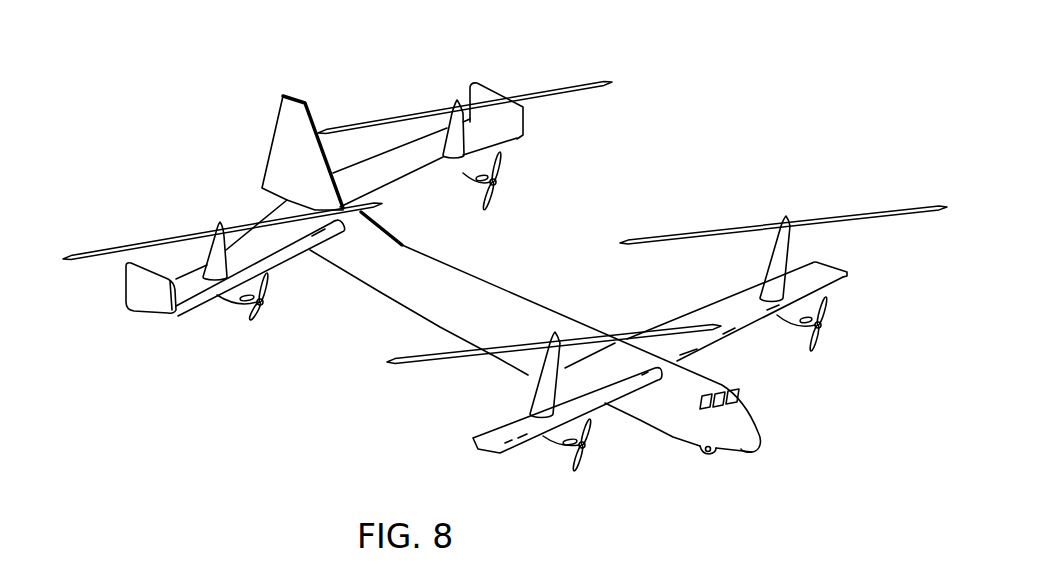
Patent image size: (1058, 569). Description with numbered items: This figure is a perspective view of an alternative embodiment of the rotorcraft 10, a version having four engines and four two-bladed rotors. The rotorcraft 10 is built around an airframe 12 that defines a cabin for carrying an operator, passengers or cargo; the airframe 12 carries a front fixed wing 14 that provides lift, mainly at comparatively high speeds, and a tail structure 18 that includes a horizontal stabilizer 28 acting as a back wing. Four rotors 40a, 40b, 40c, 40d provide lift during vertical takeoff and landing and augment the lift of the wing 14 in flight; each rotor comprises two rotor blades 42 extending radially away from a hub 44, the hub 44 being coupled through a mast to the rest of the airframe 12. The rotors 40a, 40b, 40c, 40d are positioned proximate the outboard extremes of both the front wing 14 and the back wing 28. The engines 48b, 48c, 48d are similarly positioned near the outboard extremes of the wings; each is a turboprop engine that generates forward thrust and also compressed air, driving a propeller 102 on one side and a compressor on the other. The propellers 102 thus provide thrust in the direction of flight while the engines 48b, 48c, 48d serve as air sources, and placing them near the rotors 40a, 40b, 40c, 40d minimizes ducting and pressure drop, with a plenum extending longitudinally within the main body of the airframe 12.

The rotorcraft 10 is at (221, 86).
The airframe 12 is at (727, 440).
The fixed wing 14 is at (686, 287).
The tail structure 18 is at (314, 86).
The horizontal stabilizer 28 is at (313, 170).
The rotor 40a is at (530, 322).
The rotor 40b is at (803, 192).
The rotor 40c is at (191, 197).
The rotor 40d is at (446, 73).
The rotor blade 42 is at (85, 254).
The hub 44 is at (218, 221).
The engine 48b is at (798, 343).
The engine 48c is at (215, 319).
The engine 48d is at (518, 165).
The propeller 102 is at (292, 295).